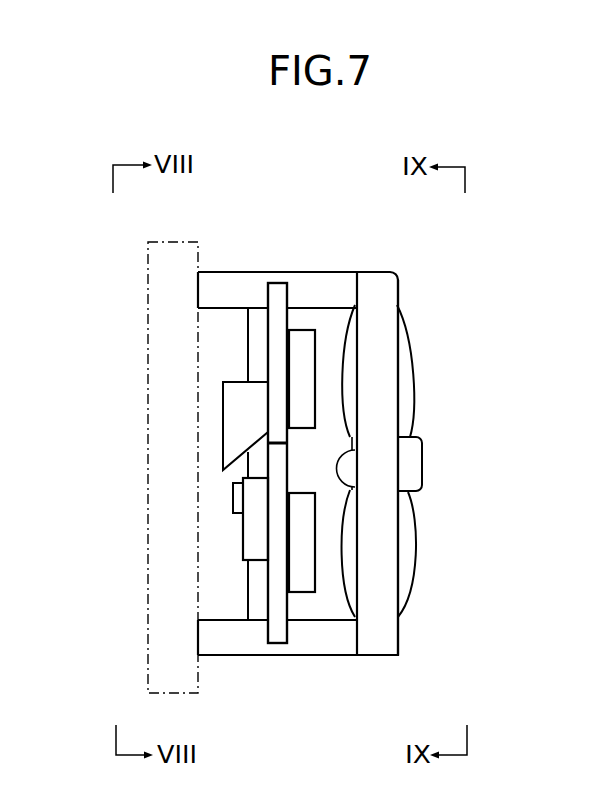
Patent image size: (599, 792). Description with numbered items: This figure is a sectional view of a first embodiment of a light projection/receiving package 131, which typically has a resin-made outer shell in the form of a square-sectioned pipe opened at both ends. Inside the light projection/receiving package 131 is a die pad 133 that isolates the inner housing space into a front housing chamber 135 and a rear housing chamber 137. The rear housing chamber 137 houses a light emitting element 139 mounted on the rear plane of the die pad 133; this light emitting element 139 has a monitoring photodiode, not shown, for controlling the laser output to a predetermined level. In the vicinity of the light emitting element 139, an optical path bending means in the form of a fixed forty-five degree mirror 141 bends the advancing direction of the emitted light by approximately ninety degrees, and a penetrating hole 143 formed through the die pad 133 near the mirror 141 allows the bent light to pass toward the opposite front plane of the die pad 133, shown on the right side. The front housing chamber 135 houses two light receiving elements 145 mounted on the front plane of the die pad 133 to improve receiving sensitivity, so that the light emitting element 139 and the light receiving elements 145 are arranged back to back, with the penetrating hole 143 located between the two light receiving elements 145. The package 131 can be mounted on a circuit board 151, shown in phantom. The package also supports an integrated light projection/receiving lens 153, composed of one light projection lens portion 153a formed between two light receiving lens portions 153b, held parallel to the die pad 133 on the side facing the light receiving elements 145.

The light projection/receiving package 131 is at (364, 178).
The die pad 133 is at (274, 630).
The front housing chamber 135 is at (327, 608).
The rear housing chamber 137 is at (207, 490).
The light emitting element 139 is at (237, 502).
The optical path bending means (fixed 45° mirror) 141 is at (236, 390).
The penetrating hole 143 is at (290, 447).
The light receiving elements 145 is at (315, 358).
The circuit board 151 is at (147, 305).
The integrated light projection/receiving lens 153 is at (409, 637).
The light projection lens portion 153a is at (423, 476).
The light receiving lens portions 153b is at (415, 422).